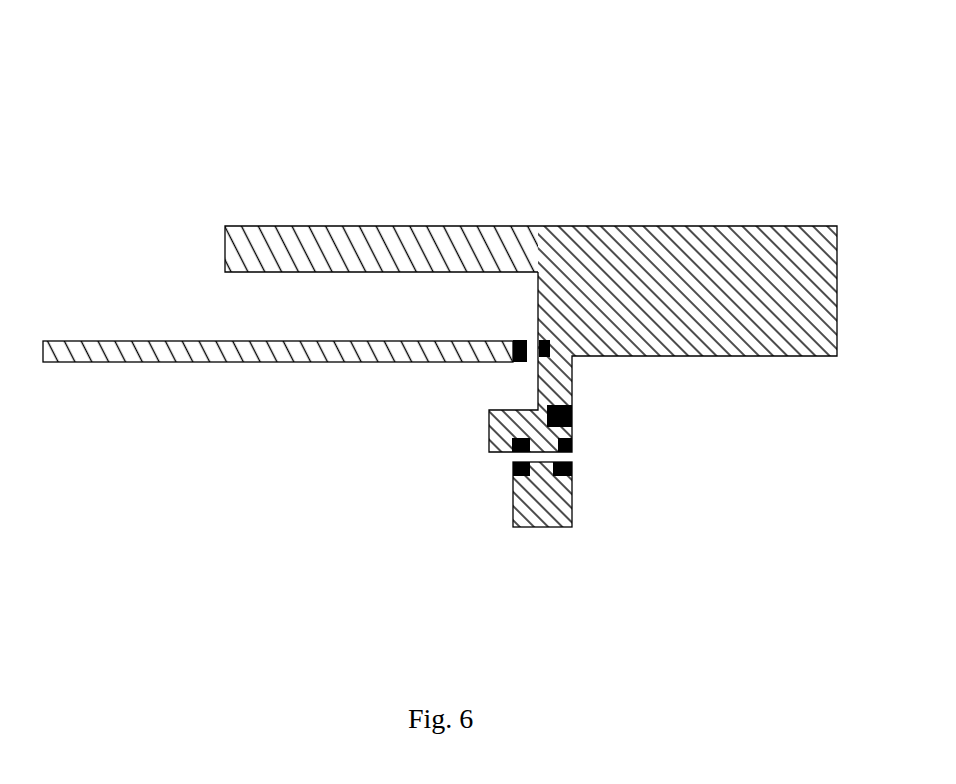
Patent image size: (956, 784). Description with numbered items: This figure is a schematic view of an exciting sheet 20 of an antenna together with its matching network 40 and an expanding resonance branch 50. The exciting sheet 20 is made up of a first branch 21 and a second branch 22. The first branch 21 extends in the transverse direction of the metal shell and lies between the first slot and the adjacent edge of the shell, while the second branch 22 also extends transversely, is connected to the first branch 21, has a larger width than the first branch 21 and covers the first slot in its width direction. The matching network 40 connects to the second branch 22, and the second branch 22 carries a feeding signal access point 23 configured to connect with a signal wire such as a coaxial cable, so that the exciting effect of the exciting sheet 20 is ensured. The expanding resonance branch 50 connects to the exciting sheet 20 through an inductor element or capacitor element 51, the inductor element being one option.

The exciting sheet 20 is at (531, 226).
The first branch 21 is at (385, 248).
The second branch 22 is at (662, 280).
The feeding signal access point 23 is at (572, 420).
The matching network 40 is at (552, 502).
The expanding resonance branch 50 is at (220, 348).
The inductor element or capacitor element 51 is at (515, 360).